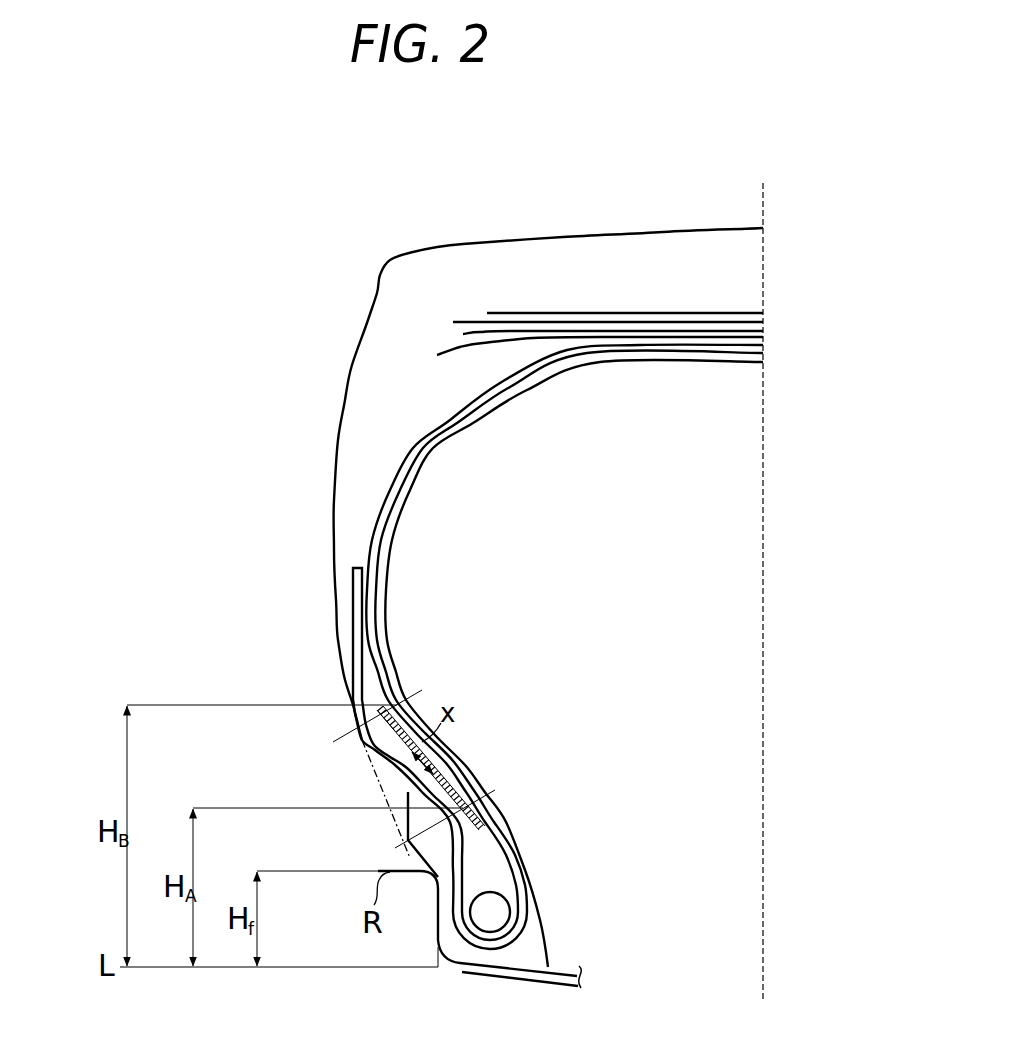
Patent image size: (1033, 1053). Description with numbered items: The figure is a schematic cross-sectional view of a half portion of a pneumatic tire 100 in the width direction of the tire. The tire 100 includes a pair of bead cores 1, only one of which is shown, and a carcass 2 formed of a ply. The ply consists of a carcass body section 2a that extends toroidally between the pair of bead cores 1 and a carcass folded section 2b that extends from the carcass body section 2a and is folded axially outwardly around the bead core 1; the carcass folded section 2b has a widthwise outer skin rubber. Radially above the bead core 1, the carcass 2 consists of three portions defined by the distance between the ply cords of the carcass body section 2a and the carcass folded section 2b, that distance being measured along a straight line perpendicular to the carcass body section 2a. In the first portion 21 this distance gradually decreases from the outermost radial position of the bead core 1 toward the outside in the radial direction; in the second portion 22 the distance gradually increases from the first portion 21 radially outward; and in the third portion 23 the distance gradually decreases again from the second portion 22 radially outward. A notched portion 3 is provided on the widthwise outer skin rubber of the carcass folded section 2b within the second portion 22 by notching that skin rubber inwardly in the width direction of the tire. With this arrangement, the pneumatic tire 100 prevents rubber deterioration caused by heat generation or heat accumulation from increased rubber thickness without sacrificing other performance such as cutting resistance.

The pneumatic tire 100 is at (505, 222).
The bead core 1 is at (494, 913).
The carcass 2 is at (558, 647).
The carcass body section 2a is at (488, 832).
The carcass folded section 2b is at (362, 636).
The notched portion 3 is at (408, 793).
The first portion 21 is at (484, 876).
The second portion 22 is at (432, 781).
The third portion 23 is at (375, 697).